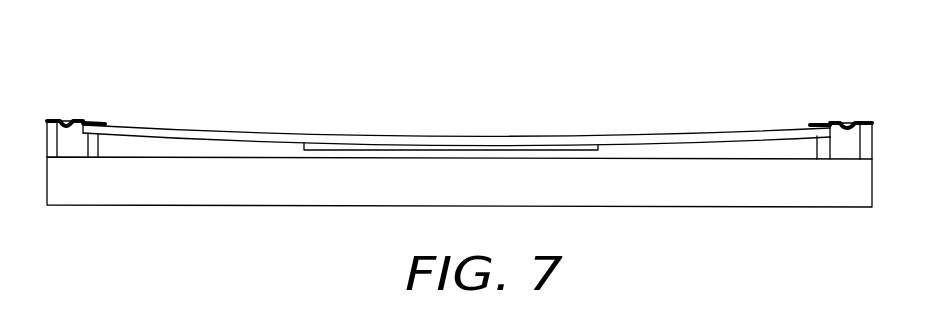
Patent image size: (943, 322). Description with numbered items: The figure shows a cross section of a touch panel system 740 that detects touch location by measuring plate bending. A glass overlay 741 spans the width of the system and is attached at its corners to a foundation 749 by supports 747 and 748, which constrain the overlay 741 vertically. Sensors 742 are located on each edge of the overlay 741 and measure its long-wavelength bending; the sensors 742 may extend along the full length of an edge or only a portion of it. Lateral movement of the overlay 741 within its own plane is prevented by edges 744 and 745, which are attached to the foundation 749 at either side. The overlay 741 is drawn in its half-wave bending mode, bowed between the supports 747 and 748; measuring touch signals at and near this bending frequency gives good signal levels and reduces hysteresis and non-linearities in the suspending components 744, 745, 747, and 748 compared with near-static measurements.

The system 740 is at (273, 56).
The overlay 741 is at (384, 134).
The sensors 742 is at (559, 150).
The edge 744 is at (849, 121).
The edge 745 is at (73, 119).
The support 747 is at (89, 142).
The support 748 is at (825, 150).
The foundation 749 is at (330, 192).